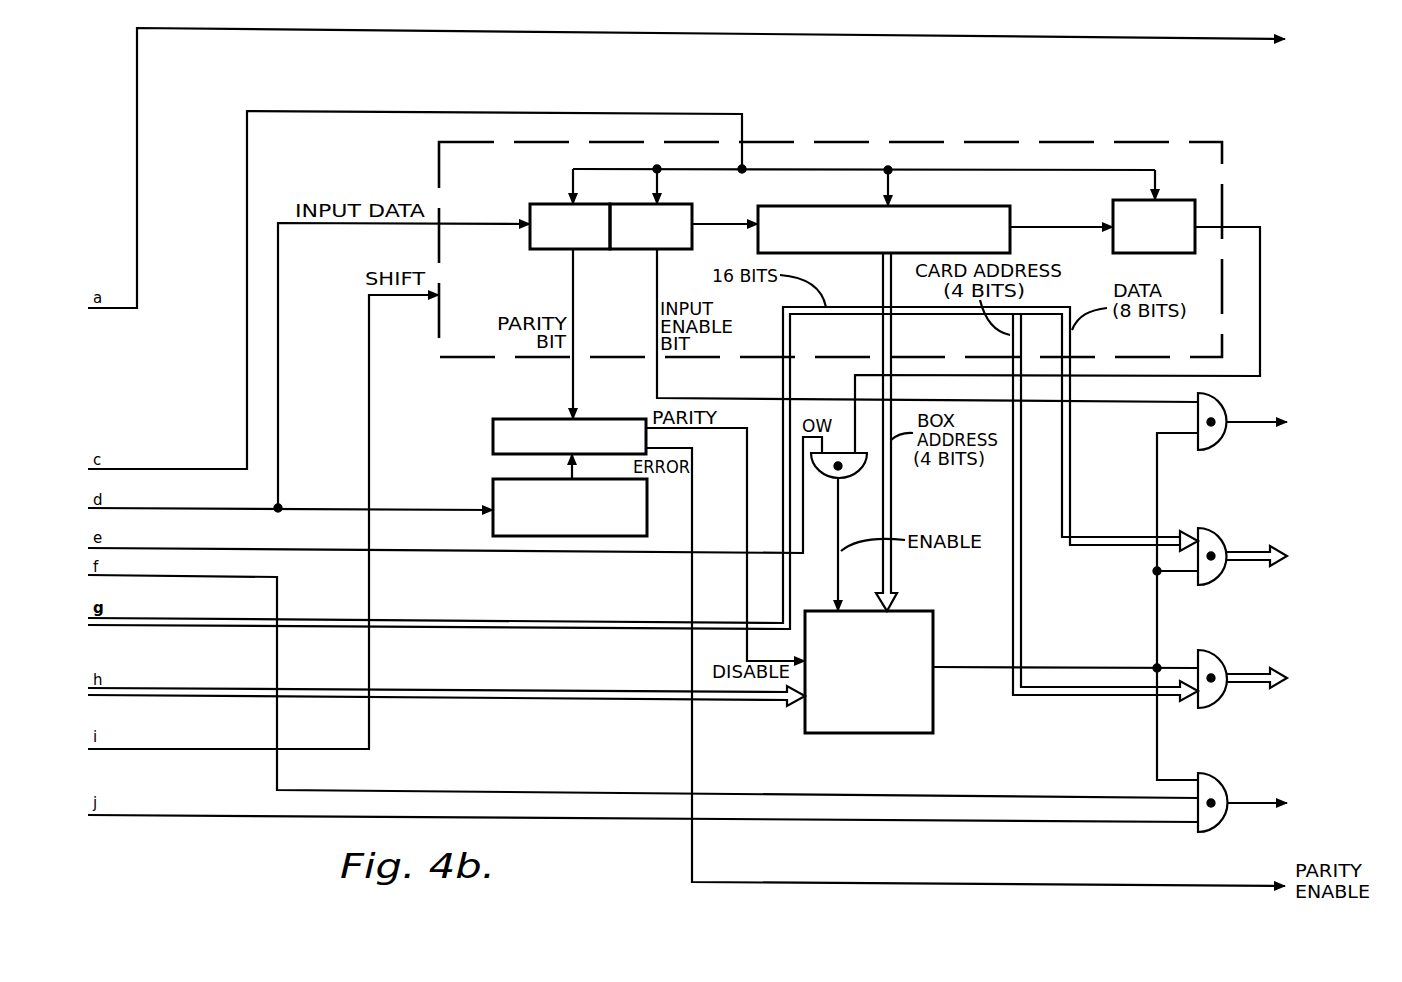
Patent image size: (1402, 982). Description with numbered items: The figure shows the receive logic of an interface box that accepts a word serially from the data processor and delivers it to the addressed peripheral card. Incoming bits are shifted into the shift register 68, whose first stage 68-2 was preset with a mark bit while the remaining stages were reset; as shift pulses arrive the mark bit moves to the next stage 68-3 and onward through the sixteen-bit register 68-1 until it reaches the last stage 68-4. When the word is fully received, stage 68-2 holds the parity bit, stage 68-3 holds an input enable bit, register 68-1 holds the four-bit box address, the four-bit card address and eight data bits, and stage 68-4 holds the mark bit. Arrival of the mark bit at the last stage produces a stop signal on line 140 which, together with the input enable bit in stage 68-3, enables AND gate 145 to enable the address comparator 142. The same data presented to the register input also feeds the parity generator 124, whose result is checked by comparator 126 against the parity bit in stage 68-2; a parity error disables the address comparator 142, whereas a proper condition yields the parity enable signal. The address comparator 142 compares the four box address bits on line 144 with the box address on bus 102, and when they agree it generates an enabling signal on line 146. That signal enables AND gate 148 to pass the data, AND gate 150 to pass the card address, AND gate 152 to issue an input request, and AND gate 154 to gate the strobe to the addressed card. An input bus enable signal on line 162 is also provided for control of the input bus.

The input bus enable line 162 is at (1080, 38).
The shift register 68 is at (1105, 146).
The 16 bit register 68-1 is at (940, 205).
The first stage 68-2 is at (527, 243).
The next stage 68-3 is at (665, 203).
The stage 68-4 is at (1150, 200).
The line 140 is at (1238, 227).
The comparator 126 is at (538, 419).
The parity generator 124 is at (505, 479).
The AND gate 145 is at (863, 468).
The line 144 is at (891, 580).
The line 146 is at (968, 667).
The address comparator 142 is at (868, 735).
The bus 102 is at (620, 700).
The AND gate 152 is at (1223, 441).
The AND gate 148 is at (1206, 528).
The AND gate 150 is at (1206, 650).
The AND gate 154 is at (1206, 773).